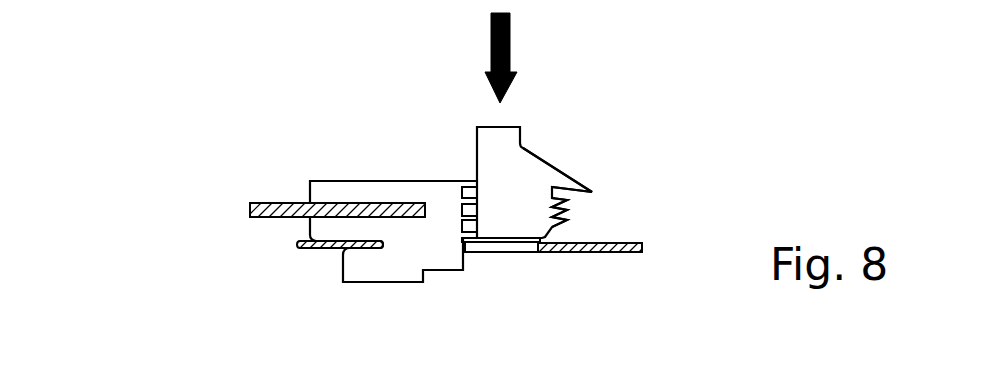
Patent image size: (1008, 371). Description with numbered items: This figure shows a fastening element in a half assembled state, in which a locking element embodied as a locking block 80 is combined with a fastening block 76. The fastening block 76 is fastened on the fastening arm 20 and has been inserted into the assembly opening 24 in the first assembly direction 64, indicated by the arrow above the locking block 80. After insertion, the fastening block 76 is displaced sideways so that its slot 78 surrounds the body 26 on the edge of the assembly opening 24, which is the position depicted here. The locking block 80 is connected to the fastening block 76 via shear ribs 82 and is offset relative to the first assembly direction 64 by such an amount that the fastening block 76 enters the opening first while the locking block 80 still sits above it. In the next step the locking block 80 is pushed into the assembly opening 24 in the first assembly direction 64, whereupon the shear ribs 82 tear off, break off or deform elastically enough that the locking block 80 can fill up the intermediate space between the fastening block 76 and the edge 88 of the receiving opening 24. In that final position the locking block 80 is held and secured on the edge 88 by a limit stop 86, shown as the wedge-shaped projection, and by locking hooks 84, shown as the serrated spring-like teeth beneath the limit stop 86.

The fastening arm 20 is at (250, 208).
The assembly opening 24 is at (500, 247).
The body 26 is at (297, 242).
The first assembly direction 64 is at (510, 58).
The fastening block 76 is at (329, 187).
The slot 78 is at (382, 246).
The locking block 80 is at (493, 152).
The shear ribs 82 is at (472, 210).
The locking hooks 84 is at (568, 200).
The limit stop 86 is at (575, 181).
The edge 88 is at (543, 250).